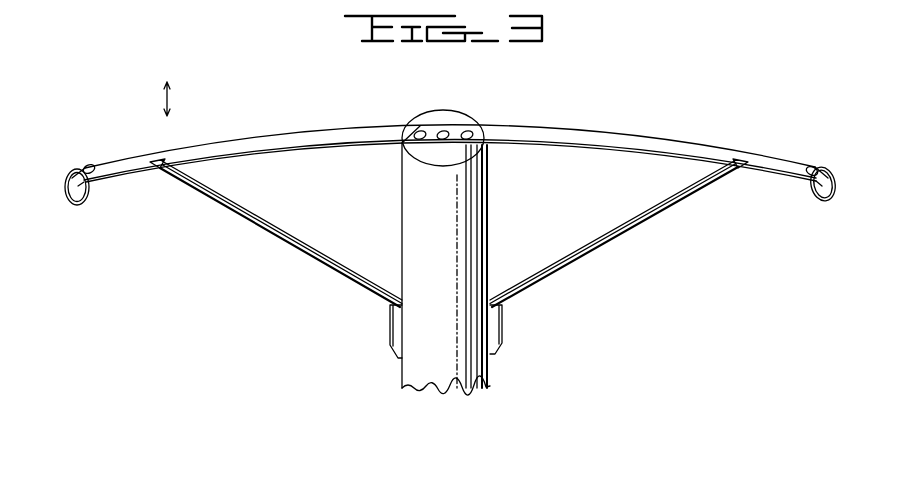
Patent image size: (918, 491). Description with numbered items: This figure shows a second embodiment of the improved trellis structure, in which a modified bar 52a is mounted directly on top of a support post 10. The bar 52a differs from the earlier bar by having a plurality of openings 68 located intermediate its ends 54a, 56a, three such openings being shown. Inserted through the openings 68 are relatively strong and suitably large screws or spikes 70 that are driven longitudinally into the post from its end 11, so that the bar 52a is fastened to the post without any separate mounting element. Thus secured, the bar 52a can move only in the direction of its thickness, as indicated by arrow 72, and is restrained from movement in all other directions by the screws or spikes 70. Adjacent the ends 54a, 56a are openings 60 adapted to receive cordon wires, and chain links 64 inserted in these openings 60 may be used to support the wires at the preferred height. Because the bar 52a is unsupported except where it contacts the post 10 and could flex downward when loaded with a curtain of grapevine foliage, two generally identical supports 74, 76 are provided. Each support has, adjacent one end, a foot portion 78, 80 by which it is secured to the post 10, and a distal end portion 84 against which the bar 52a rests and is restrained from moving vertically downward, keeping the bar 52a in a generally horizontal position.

The support post 10 is at (473, 386).
The end of post 11 is at (416, 125).
The bar 52a is at (605, 126).
The end of bar 54a is at (72, 172).
The end of bar 56a is at (830, 168).
The opening 60 is at (87, 164).
The chain link 64 is at (79, 206).
The opening 68 is at (443, 139).
The screw or spike 70 is at (466, 140).
The arrow 72 is at (172, 82).
The support 74 is at (316, 263).
The support 76 is at (586, 260).
The foot portion 78 is at (504, 334).
The foot portion 80 is at (390, 330).
The distal end portion 84 is at (157, 167).